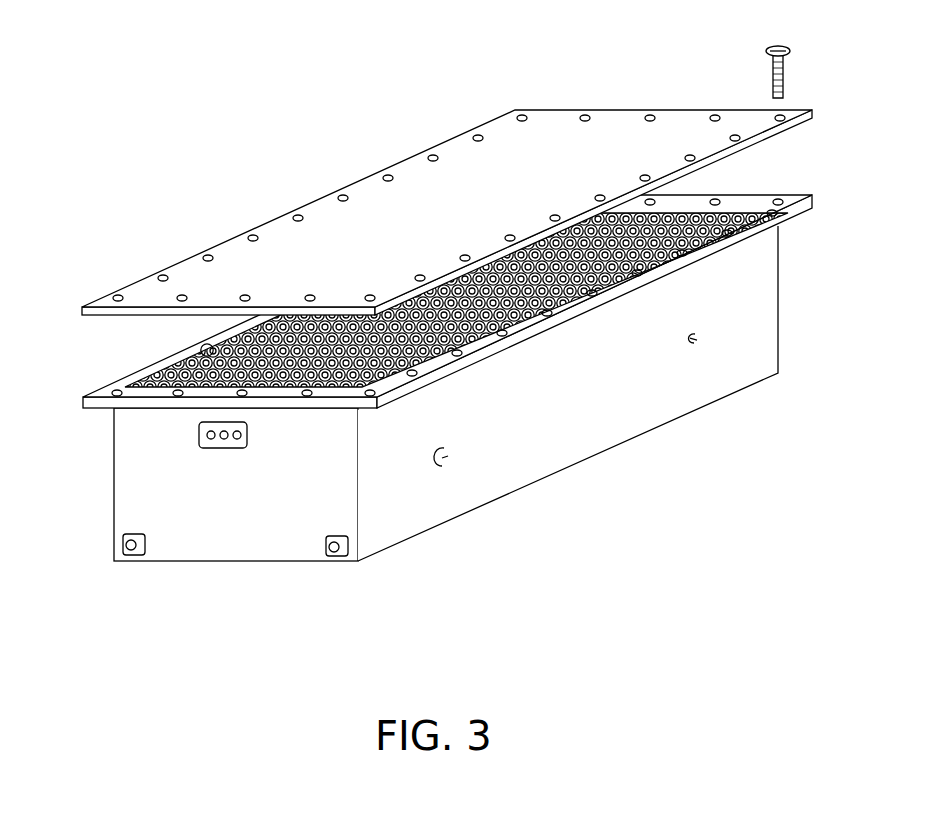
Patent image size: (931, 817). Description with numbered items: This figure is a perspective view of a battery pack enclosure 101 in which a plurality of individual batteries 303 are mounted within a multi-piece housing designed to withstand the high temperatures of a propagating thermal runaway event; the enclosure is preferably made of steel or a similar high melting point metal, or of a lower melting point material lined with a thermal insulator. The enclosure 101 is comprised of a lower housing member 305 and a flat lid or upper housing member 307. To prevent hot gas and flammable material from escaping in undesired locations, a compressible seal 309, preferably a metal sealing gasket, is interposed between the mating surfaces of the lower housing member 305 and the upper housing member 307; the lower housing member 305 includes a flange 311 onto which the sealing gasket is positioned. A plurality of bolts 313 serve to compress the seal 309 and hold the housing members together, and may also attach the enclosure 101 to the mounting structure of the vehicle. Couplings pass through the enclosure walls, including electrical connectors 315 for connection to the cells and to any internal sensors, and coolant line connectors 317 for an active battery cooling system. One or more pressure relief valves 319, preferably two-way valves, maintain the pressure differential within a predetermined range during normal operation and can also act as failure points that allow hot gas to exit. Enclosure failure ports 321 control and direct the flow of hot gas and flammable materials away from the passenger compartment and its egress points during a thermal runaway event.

The battery pack enclosure 101 is at (263, 110).
The individual batteries 303 is at (200, 344).
The lower housing member 305 is at (589, 400).
The upper housing member 307 is at (499, 214).
The compressible seal 309 is at (782, 214).
The flange 311 is at (478, 338).
The bolts 313 is at (780, 45).
The electrical connectors 315 is at (195, 447).
The coolant line connectors 317 is at (334, 561).
The pressure relief valves 319 is at (698, 340).
The enclosure failure ports 321 is at (448, 456).